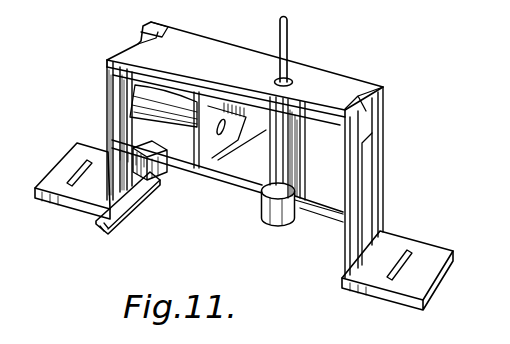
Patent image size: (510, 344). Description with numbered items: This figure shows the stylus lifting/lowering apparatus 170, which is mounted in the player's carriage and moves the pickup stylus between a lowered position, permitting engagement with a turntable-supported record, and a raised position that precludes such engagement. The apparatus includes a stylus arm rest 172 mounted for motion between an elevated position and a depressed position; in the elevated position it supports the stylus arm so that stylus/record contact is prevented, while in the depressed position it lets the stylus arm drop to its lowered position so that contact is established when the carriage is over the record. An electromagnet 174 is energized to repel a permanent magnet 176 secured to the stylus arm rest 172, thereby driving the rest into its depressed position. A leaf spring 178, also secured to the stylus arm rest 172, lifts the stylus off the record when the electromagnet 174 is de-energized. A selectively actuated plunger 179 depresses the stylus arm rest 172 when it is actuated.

The stylus lifting/lowering apparatus 170 is at (393, 78).
The stylus arm rest 172 is at (133, 212).
The electromagnet 174 is at (110, 90).
The permanent magnet 176 is at (157, 186).
The leaf spring 178 is at (225, 186).
The plunger 179 is at (287, 44).